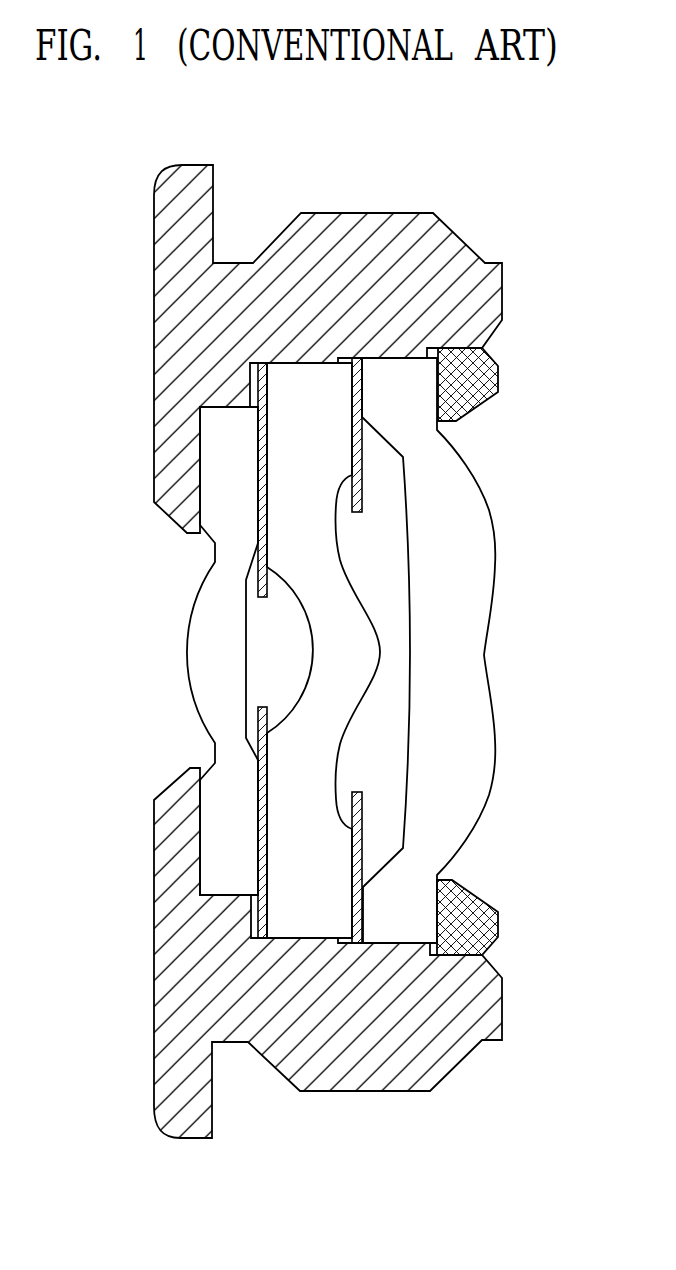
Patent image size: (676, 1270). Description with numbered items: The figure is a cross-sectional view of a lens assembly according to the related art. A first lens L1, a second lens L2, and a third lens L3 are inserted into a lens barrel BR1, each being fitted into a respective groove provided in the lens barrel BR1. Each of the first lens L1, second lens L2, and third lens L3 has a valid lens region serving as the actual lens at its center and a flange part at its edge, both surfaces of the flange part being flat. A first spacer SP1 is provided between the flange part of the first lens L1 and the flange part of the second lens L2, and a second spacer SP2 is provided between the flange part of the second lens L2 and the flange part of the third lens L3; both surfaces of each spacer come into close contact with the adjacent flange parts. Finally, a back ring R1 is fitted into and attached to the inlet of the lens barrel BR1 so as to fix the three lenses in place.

The lens barrel BR1 is at (371, 211).
The back ring R1 is at (492, 380).
The first lens L1 is at (232, 882).
The second lens L2 is at (310, 923).
The third lens L3 is at (395, 932).
The first spacer SP1 is at (267, 551).
The second spacer SP2 is at (362, 496).